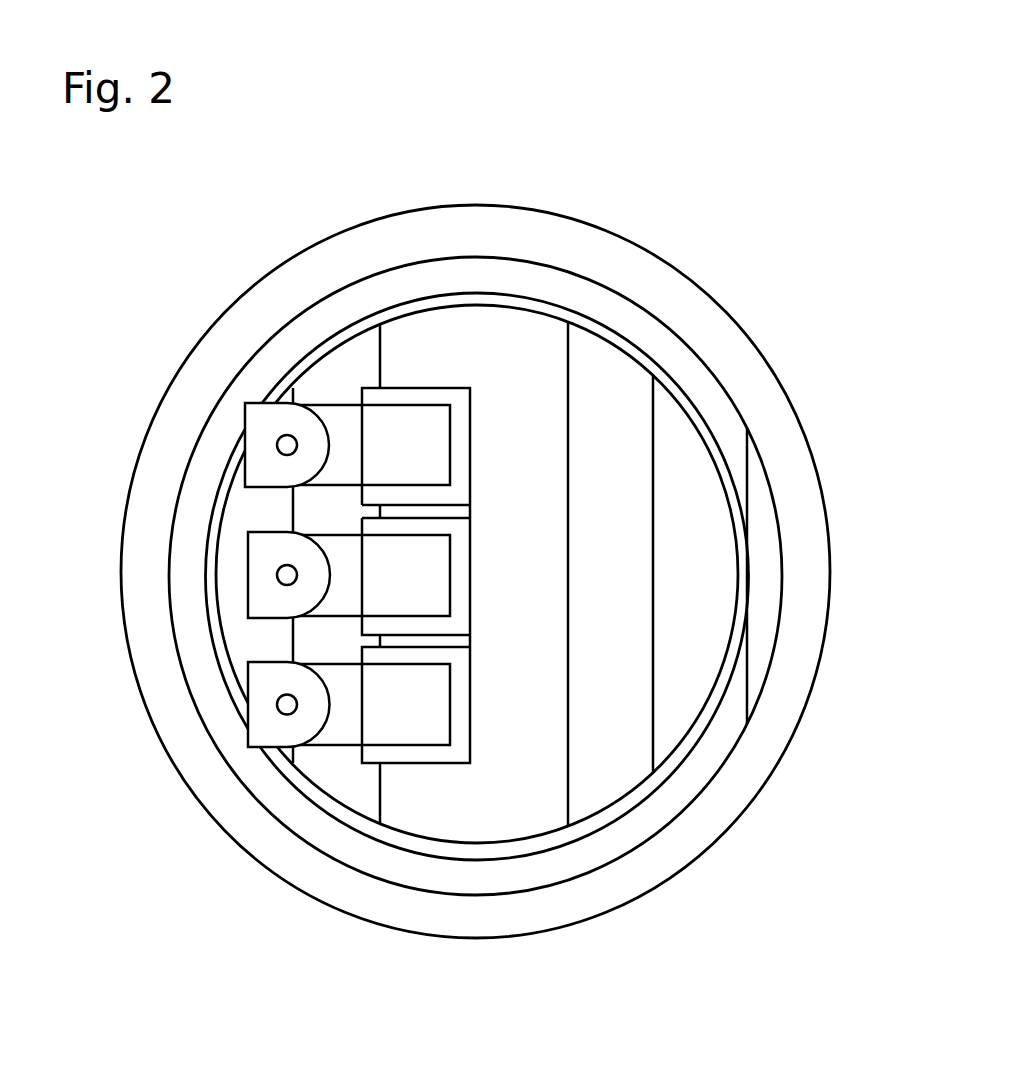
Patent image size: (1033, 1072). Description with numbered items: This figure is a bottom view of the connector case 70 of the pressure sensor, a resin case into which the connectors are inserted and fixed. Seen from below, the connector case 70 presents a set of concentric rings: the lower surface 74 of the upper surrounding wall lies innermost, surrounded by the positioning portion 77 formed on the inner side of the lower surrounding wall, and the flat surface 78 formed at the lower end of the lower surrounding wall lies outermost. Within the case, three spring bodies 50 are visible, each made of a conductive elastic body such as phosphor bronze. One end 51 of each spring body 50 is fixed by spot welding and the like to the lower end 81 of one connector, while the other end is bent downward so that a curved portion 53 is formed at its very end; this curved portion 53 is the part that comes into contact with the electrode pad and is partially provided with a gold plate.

The connector case 70 is at (598, 187).
The lower surface of the upper surrounding wall 74 is at (633, 447).
The positioning portion 77 is at (767, 552).
The flat surface 78 is at (743, 787).
The lower end of connector 81 is at (455, 397).
The spring body 50 is at (337, 420).
The one end of spring body 51 is at (405, 425).
The curved portion 53 is at (268, 428).